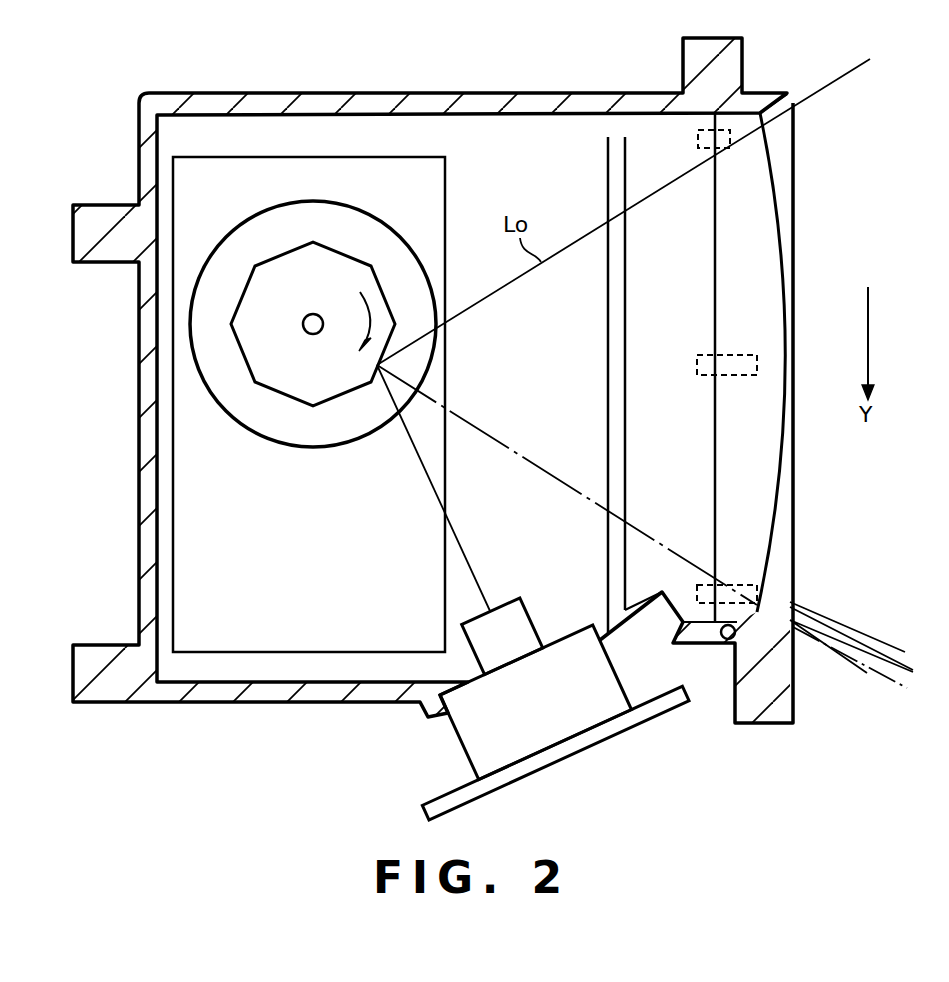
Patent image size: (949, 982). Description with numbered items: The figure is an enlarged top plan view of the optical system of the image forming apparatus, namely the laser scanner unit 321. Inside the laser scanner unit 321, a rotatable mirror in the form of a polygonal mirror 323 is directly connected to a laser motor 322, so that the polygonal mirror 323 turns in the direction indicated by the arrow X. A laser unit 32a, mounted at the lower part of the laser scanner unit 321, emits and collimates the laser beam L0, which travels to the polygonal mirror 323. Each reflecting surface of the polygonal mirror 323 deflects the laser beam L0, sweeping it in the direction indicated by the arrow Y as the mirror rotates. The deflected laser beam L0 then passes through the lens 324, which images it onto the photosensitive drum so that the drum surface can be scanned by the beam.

The laser scanner unit 321 is at (478, 93).
The laser motor 322 is at (275, 222).
The polygonal mirror 323 is at (335, 263).
The lens 324 is at (752, 235).
The laser unit 32a is at (577, 720).